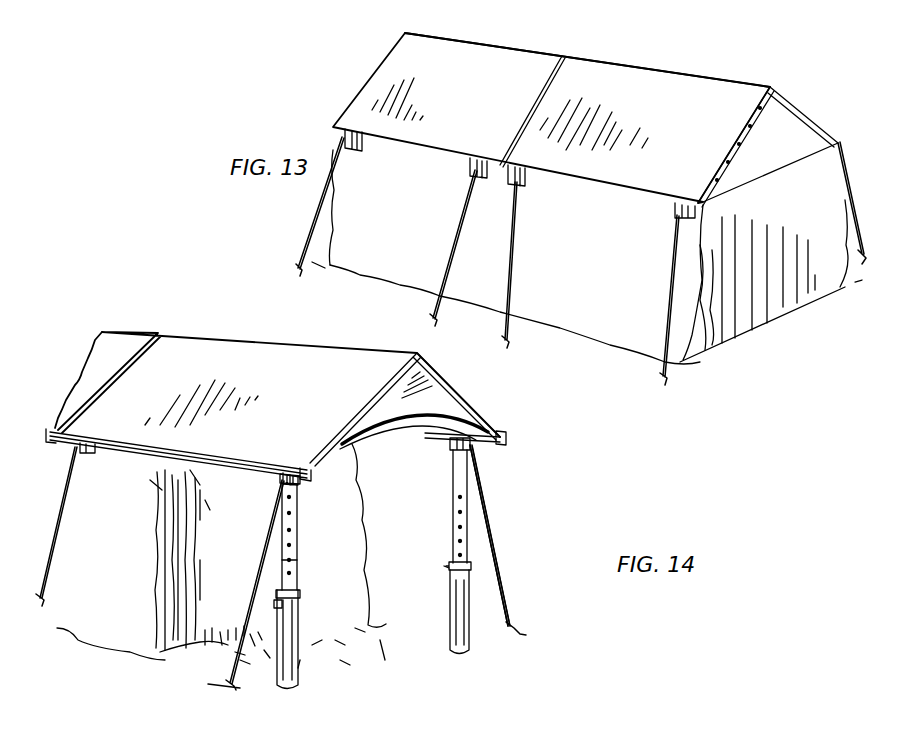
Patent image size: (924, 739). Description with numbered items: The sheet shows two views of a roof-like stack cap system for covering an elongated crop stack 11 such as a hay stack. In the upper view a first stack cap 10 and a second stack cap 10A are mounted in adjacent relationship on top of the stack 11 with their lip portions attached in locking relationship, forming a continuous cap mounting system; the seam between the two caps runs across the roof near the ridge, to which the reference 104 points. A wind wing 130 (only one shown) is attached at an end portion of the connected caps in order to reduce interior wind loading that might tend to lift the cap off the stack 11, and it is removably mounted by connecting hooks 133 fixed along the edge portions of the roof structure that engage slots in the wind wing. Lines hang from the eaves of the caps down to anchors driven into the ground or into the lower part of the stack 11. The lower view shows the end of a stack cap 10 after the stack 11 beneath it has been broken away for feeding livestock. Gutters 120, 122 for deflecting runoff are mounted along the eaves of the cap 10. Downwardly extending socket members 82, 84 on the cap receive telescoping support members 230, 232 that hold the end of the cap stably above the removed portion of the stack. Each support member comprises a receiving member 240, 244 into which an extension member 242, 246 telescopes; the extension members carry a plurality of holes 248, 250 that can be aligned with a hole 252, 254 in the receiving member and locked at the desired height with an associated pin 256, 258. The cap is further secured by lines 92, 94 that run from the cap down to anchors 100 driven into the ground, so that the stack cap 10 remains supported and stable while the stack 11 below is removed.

In FIG. 13, the stack cap 10 is at (641, 60).
In FIG. 14, the stack cap 10 is at (260, 340).
In FIG. 14, the second stack cap 10A is at (134, 328).
In FIG. 13, the ridge 104 is at (503, 45).
In FIG. 13, the hooks 133 is at (792, 102).
In FIG. 13, the wind wing 130 is at (782, 135).
In FIG. 13, the stack 11 is at (597, 264).
In FIG. 14, the stack 11 is at (254, 506).
In FIG. 14, the gutter 120 is at (242, 458).
In FIG. 14, the gutter 122 is at (508, 438).
In FIG. 14, the socket member 84 is at (455, 447).
In FIG. 14, the socket member 82 is at (300, 486).
In FIG. 14, the line 92 is at (282, 534).
In FIG. 14, the holes 248 is at (297, 534).
In FIG. 14, the extension member 242 is at (297, 578).
In FIG. 14, the pin 256 is at (276, 602).
In FIG. 14, the hole 252 is at (276, 618).
In FIG. 14, the receiving member 240 is at (299, 612).
In FIG. 14, the telescoping support member 230 is at (300, 664).
In FIG. 14, the anchor 100 is at (226, 683).
In FIG. 14, the holes 250 is at (472, 476).
In FIG. 14, the extension member 246 is at (470, 488).
In FIG. 14, the line 94 is at (488, 534).
In FIG. 14, the hole 254 is at (500, 546).
In FIG. 14, the telescoping support member 232 is at (470, 572).
In FIG. 14, the pin 258 is at (452, 568).
In FIG. 14, the receiving member 244 is at (468, 608).